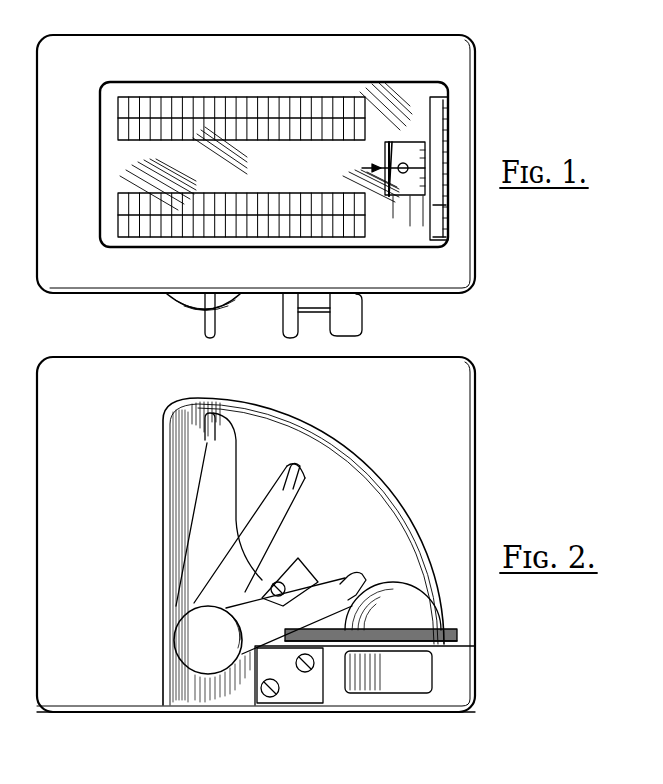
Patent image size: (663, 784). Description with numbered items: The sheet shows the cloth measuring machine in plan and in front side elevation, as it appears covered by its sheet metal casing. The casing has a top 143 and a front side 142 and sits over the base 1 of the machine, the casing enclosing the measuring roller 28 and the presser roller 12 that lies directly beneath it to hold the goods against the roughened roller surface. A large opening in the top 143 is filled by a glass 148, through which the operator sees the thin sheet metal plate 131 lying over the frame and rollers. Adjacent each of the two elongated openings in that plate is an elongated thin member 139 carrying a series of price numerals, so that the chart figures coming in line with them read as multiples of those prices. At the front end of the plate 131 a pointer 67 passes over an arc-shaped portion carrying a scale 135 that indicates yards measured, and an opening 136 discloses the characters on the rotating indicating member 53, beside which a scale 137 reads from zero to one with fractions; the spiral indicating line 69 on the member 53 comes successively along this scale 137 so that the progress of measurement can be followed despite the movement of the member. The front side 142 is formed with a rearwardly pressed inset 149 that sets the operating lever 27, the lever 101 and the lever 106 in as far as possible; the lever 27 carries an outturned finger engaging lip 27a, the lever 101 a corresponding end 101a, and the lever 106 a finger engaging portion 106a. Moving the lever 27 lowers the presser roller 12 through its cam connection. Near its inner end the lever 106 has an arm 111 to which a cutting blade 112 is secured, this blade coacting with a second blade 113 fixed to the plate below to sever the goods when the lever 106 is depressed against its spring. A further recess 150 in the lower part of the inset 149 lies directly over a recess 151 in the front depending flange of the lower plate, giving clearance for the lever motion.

In FIG. 2, the base 1 is at (312, 712).
In FIG. 2, the presser roller 12 is at (458, 641).
In FIG. 1, the operating lever 27 is at (317, 300).
In FIG. 2, the operating lever 27 is at (286, 626).
In FIG. 1, the lever tab 27a is at (364, 326).
In FIG. 2, the lever tab 27a is at (364, 583).
In FIG. 2, the measuring roller 28 is at (457, 636).
In FIG. 1, the indicating member 53 is at (401, 185).
In FIG. 1, the pointer 67 is at (453, 97).
In FIG. 1, the indicating line 69 is at (391, 193).
In FIG. 1, the lever 101 is at (258, 298).
In FIG. 2, the lever 101 is at (283, 522).
In FIG. 1, the lever tab 101a is at (288, 322).
In FIG. 2, the lever tab 101a is at (300, 472).
In FIG. 1, the operating handle or lever 106 is at (172, 302).
In FIG. 2, the operating handle or lever 106 is at (222, 463).
In FIG. 1, the finger engaging portion 106a is at (210, 320).
In FIG. 2, the finger engaging portion 106a is at (208, 425).
In FIG. 2, the arm 111 is at (305, 571).
In FIG. 2, the cutting blade 112 is at (310, 590).
In FIG. 2, the second blade 113 is at (313, 678).
In FIG. 1, the plate 131 is at (125, 167).
In FIG. 1, the scale 135 is at (438, 208).
In FIG. 1, the opening 136 is at (385, 156).
In FIG. 1, the scale 137 is at (408, 240).
In FIG. 1, the elongated thin member 139 is at (200, 112).
In FIG. 2, the front side 142 is at (441, 473).
In FIG. 1, the top 143 is at (363, 52).
In FIG. 1, the glass 148 is at (398, 97).
In FIG. 2, the inset 149 is at (345, 498).
In FIG. 2, the recess 150 is at (395, 606).
In FIG. 2, the recess 151 is at (415, 675).